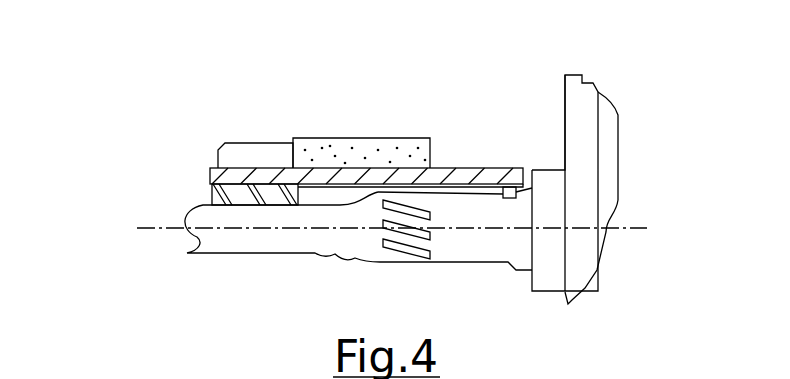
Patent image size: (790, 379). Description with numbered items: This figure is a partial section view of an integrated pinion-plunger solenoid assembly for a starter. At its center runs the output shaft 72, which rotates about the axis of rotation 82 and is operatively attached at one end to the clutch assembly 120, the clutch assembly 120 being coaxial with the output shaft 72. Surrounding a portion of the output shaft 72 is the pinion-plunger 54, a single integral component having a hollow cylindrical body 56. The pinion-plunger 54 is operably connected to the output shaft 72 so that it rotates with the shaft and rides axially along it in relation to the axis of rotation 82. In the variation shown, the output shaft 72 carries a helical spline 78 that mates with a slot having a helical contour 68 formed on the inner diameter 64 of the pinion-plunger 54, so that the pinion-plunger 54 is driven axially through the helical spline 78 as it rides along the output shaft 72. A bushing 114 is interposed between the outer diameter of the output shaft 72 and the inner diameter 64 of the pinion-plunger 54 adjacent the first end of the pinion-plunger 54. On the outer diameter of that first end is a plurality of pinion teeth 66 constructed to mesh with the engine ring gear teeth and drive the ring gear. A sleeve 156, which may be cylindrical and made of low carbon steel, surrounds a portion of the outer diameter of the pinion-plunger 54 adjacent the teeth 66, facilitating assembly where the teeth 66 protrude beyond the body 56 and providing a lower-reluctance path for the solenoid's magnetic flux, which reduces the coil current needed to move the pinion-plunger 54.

The pinion-plunger 54 is at (212, 176).
The hollow cylindrical body 56 is at (492, 170).
The inner diameter 64 is at (340, 187).
The pinion teeth 66 is at (244, 155).
The helical contour 68 is at (367, 190).
The output shaft 72 is at (213, 243).
The helical spline 78 is at (418, 255).
The axis of rotation 82 is at (623, 227).
The bushing 114 is at (213, 187).
The clutch assembly 120 is at (590, 118).
The sleeve 156 is at (353, 150).